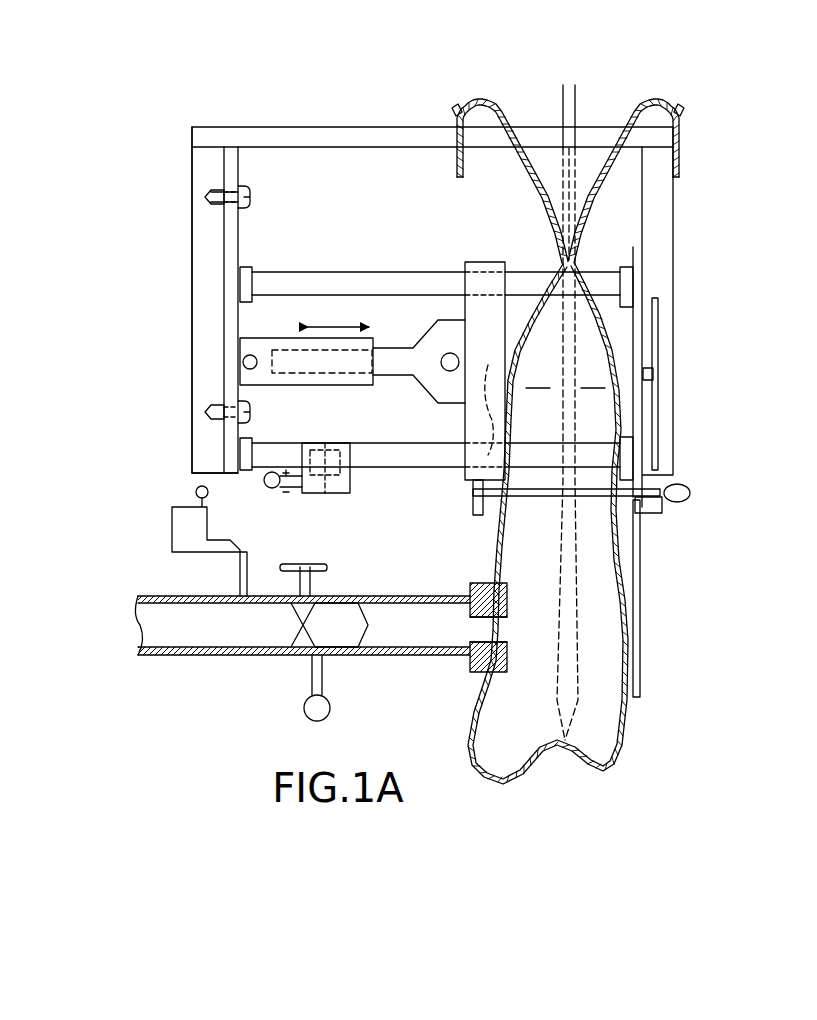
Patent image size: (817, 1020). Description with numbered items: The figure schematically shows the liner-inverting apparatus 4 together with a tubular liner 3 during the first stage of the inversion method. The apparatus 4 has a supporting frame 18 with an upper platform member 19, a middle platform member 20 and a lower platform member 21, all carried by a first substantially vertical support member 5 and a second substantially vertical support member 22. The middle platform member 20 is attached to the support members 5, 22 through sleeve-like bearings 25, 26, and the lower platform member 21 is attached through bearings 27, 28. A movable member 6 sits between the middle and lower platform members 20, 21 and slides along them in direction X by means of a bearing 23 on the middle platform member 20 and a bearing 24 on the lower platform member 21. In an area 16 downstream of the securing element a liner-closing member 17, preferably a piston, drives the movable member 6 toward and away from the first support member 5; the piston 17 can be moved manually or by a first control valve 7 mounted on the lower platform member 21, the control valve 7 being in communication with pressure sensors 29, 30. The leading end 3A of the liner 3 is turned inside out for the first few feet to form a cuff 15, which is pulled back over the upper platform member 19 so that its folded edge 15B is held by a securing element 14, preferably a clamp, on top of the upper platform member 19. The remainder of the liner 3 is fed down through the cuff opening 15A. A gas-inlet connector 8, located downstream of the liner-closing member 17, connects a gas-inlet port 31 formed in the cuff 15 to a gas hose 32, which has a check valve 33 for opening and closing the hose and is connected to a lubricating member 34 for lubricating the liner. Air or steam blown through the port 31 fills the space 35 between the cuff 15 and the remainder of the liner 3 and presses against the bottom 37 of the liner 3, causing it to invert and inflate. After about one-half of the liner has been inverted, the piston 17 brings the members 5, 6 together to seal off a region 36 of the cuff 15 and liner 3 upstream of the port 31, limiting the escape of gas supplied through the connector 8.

The apparatus 4 is at (122, 105).
The supporting frame 18 is at (185, 186).
The upper platform member 19 is at (272, 124).
The second substantially vertical support member 22 is at (205, 272).
The first substantially vertical support member 5 is at (680, 336).
The area 16 is at (628, 320).
The sealed region 36 is at (660, 385).
The bearing 25 is at (628, 285).
The bearing 27 is at (628, 458).
The middle platform member 20 is at (352, 270).
The bearing 26 is at (255, 265).
The lower platform member 21 is at (405, 440).
The bearing 28 is at (247, 438).
The movable member 6 is at (462, 253).
The bearing 24 is at (485, 369).
The bearing 23 is at (465, 265).
The liner-closing member 17 is at (392, 390).
The first control valve 7 is at (316, 500).
The check valve 33 is at (290, 657).
The lubricating member 34 is at (230, 540).
The gas hose 32 is at (385, 595).
The gas-inlet connector 8 is at (477, 582).
The gas-inlet port 31 is at (500, 630).
The pressure sensor 30 is at (470, 512).
The pressure sensor 29 is at (655, 505).
The tubular liner 3 is at (582, 115).
The leading end 3A is at (615, 196).
The cuff 15 is at (568, 418).
The opening 15A is at (545, 170).
The folded edge 15B is at (455, 103).
The securing element 14 is at (450, 108).
The space 35 is at (566, 375).
The bottom 37 is at (610, 775).